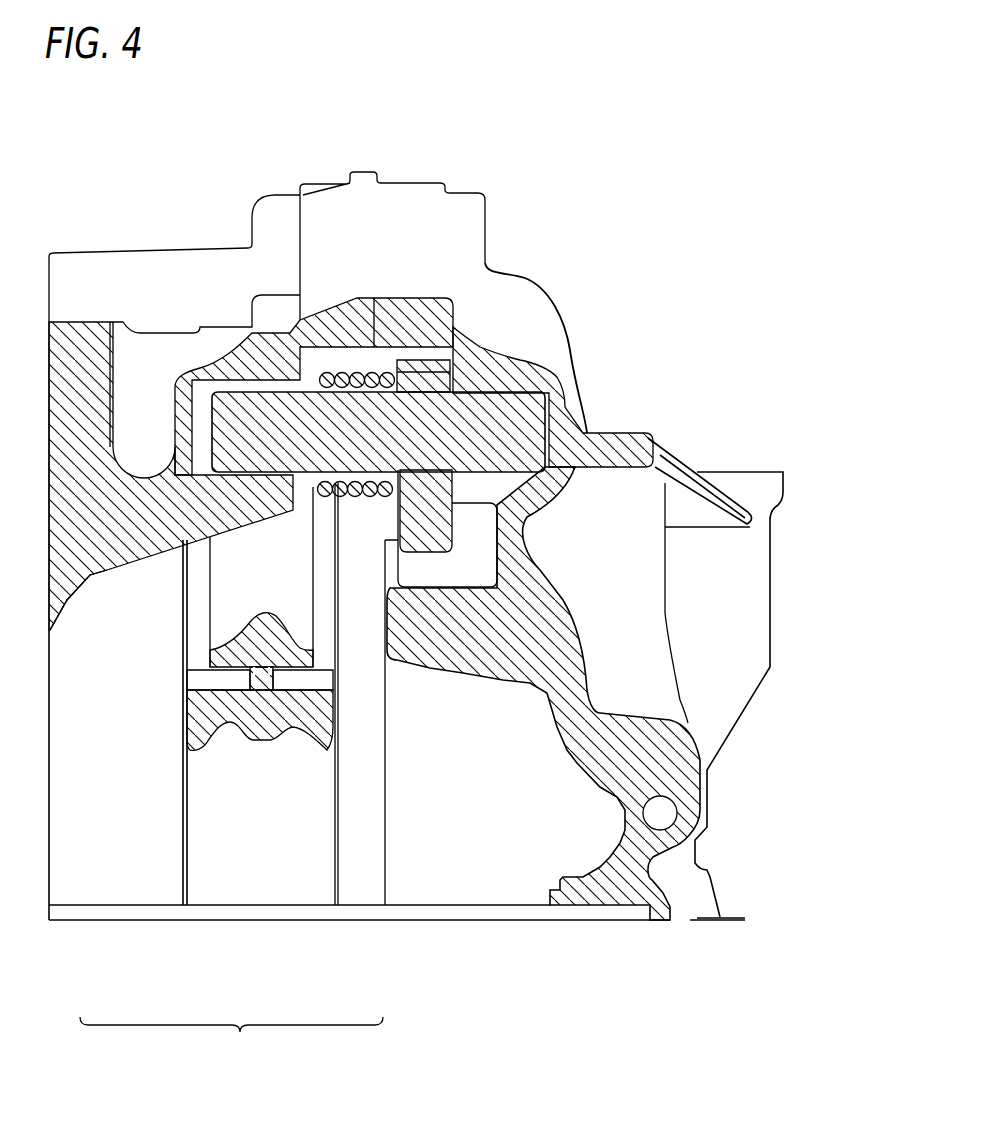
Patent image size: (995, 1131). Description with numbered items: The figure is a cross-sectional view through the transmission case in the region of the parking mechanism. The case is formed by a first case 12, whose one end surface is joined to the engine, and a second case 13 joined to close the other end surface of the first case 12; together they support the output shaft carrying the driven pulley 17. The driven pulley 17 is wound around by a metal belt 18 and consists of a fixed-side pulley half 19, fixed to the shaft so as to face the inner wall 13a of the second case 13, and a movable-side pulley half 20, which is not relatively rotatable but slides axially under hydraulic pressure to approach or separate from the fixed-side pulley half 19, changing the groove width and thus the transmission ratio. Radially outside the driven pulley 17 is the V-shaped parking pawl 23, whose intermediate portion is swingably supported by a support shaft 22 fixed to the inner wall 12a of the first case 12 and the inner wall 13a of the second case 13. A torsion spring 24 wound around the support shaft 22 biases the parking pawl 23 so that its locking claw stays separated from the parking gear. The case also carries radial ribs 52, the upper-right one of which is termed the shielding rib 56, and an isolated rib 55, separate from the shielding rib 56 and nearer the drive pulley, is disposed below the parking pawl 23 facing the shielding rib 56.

The first case 12 is at (88, 330).
The inner wall of the first case 12a is at (113, 540).
The second case 13 is at (433, 315).
The inner wall of the second case 13a is at (517, 557).
The driven pulley 17 is at (231, 1043).
The metal belt 18 is at (243, 748).
The fixed-side pulley half 19 is at (357, 888).
The movable-side pulley half 20 is at (100, 890).
The support shaft 22 is at (513, 393).
The parking pawl 23 is at (440, 522).
The torsion spring 24 is at (355, 375).
The radial rib 52 is at (464, 951).
The isolated rib 55 is at (460, 658).
The shielding rib 56 is at (467, 878).